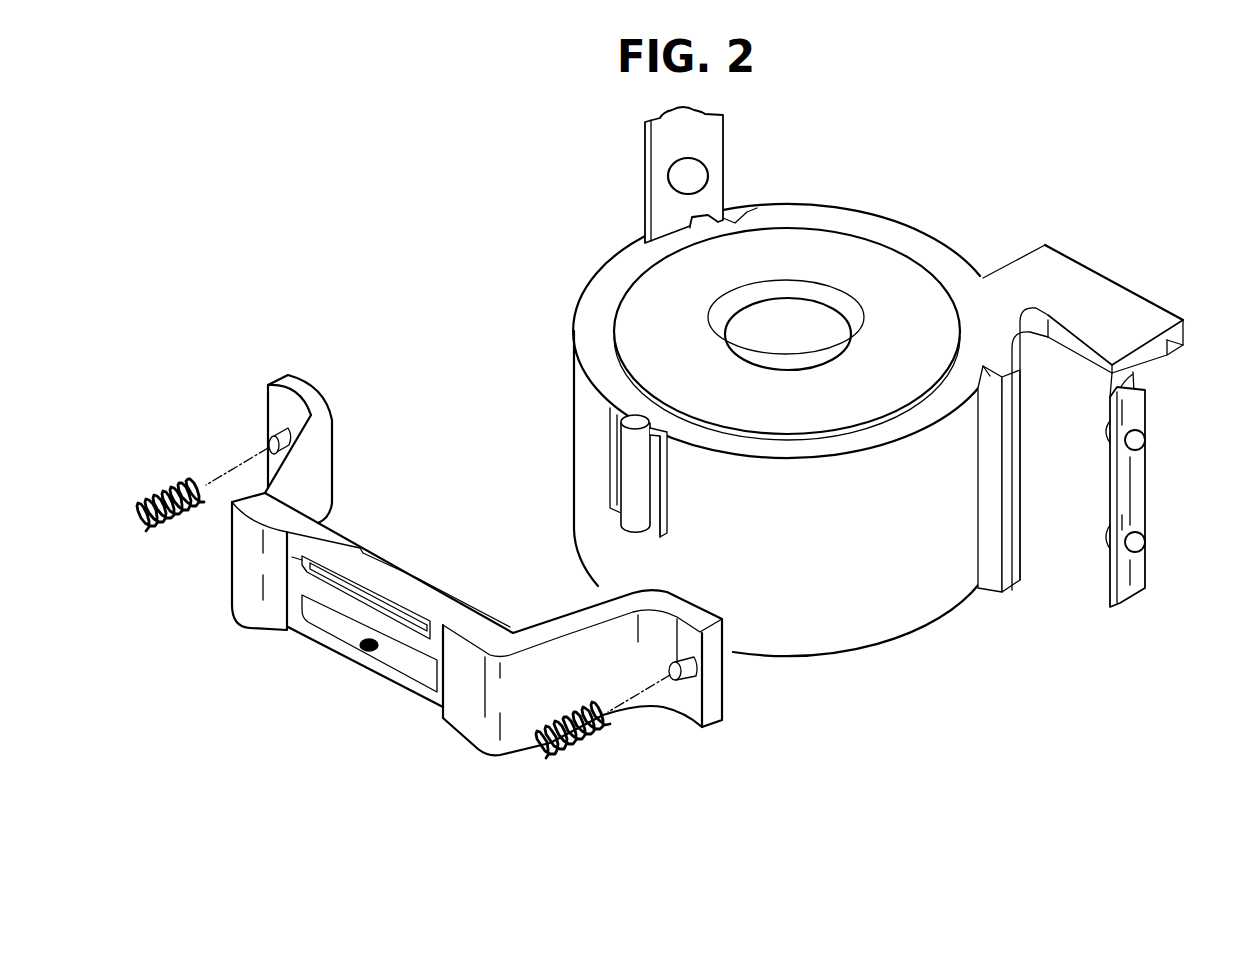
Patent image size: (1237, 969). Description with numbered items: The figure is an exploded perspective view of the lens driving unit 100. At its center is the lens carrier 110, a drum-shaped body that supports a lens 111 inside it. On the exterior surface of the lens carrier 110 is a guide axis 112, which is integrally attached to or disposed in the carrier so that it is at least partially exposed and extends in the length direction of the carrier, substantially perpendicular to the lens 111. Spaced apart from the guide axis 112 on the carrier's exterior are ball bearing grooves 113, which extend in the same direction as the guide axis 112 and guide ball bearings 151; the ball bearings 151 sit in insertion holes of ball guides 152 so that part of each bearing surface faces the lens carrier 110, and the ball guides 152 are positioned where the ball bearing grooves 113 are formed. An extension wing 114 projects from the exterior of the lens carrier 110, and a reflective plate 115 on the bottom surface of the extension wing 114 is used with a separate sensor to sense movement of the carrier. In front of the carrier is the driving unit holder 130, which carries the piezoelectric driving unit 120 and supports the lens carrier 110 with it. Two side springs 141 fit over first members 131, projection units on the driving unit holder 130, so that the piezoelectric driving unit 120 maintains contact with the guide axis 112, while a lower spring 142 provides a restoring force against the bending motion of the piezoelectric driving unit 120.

The lens driving unit 100 is at (1112, 156).
The lens carrier 110 is at (937, 577).
The lens 111 is at (793, 322).
The guide axis 112 is at (635, 450).
The ball bearing grooves 113 is at (1000, 365).
The extension wing 114 is at (1110, 292).
The reflective plate 115 is at (1150, 357).
The piezoelectric driving unit 120 is at (352, 607).
The driving unit holder 130 is at (253, 575).
The first members 131 is at (270, 437).
The side springs 141 is at (165, 530).
The lower spring 142 is at (362, 650).
The ball bearings 151 is at (678, 177).
The ball guides 152 is at (660, 147).